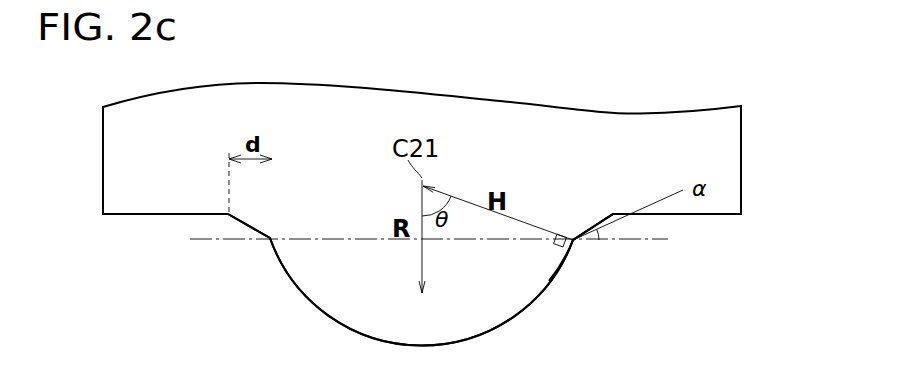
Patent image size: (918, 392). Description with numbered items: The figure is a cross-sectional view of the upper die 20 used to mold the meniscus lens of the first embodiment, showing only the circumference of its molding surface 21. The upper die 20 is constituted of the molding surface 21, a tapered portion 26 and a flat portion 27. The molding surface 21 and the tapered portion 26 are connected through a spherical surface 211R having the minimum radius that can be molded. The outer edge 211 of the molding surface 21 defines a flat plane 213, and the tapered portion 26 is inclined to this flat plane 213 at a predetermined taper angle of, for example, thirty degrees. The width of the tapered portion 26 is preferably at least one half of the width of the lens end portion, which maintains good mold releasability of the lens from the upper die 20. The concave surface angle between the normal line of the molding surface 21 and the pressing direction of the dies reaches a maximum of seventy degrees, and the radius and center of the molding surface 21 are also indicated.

The upper die 20 is at (742, 158).
The molding surface 21 is at (477, 333).
The outer edge 211 is at (573, 240).
The spherical surface 211R is at (565, 235).
The flat plane 213 is at (334, 238).
The tapered portion 26 is at (599, 221).
The flat portion 27 is at (625, 216).